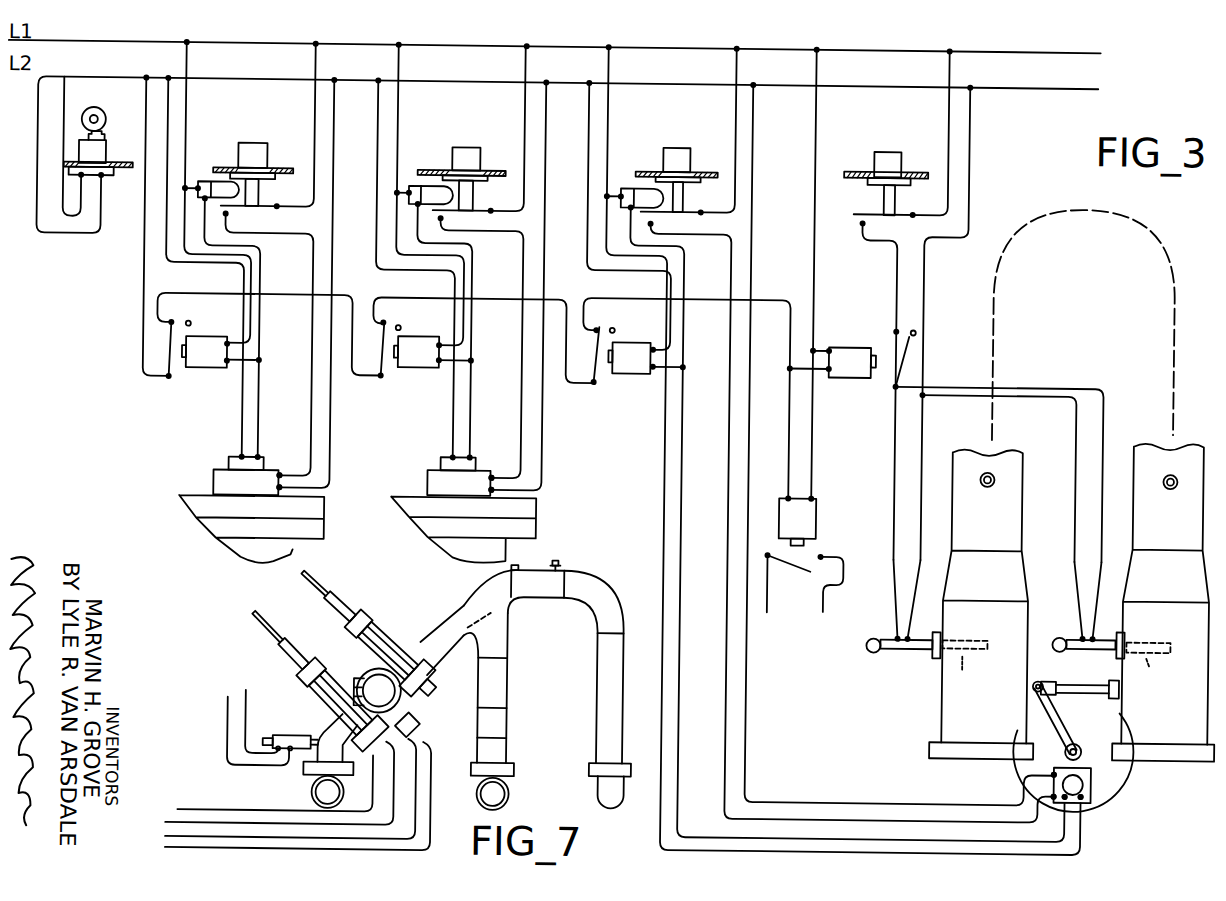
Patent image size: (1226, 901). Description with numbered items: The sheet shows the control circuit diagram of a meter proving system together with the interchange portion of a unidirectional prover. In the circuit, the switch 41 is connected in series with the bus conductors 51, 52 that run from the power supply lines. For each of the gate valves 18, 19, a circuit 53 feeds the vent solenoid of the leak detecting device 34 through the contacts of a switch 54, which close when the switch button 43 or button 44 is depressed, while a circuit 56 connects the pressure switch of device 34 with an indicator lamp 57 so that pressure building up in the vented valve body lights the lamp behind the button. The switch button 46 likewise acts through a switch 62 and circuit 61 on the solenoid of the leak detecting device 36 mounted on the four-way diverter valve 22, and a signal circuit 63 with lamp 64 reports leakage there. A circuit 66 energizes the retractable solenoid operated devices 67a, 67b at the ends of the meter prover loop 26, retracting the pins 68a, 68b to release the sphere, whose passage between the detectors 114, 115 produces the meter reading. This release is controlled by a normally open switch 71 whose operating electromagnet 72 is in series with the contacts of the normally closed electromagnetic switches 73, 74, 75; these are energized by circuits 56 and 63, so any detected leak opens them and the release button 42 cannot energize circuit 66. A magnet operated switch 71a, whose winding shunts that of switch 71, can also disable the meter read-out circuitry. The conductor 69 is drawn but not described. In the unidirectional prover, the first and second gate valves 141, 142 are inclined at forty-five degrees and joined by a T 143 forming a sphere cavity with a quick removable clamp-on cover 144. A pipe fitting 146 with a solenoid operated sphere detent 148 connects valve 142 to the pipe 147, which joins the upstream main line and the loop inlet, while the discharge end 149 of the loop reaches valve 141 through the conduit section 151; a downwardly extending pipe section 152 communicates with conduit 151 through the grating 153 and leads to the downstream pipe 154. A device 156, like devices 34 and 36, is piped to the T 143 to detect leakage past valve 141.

In FIG. 3, the gate valve 18 is at (265, 529).
In FIG. 3, the valve 19 is at (484, 530).
In FIG. 3, the four-way diverter valve 22 is at (1103, 762).
In FIG. 3, the meter prover loop 26 is at (1084, 340).
In FIG. 3, the leak detecting device 34 is at (335, 468).
In FIG. 3, the leak detecting device 36 is at (1086, 753).
In FIG. 3, the switch 41 is at (104, 141).
In FIG. 3, the release button 42 is at (897, 134).
In FIG. 3, the switch button 43 is at (264, 125).
In FIG. 3, the button 44 is at (471, 129).
In FIG. 3, the switch button 46 is at (686, 132).
In FIG. 3, the bus conductor 51 is at (555, 36).
In FIG. 3, the bus conductor 52 is at (567, 147).
In FIG. 3, the circuit 53 is at (411, 286).
In FIG. 3, the switch 54 is at (371, 345).
In FIG. 3, the circuit 56 is at (347, 336).
In FIG. 3, the indicator lamp 57 is at (318, 169).
In FIG. 3, the circuit 61 is at (899, 445).
In FIG. 7, the circuit 61 is at (275, 785).
In FIG. 3, the switch 62 is at (851, 522).
In FIG. 7, the switch 62 is at (282, 793).
In FIG. 3, the signal circuit 63 is at (849, 525).
In FIG. 3, the signal lamp 64 is at (634, 175).
In FIG. 3, the electrical circuit 66 is at (945, 324).
In FIG. 3, the retractable solenoid operated device 67a is at (904, 625).
In FIG. 3, the retractable solenoid operated device 67b is at (1088, 623).
In FIG. 3, the pin 68a is at (983, 604).
In FIG. 3, the pin 68b is at (1165, 602).
In FIG. 3, the conductor 69 is at (869, 303).
In FIG. 3, the normally open switch 71 is at (885, 380).
In FIG. 3, the magnet operated switch 71a is at (820, 592).
In FIG. 3, the operating electromagnet 72 is at (832, 384).
In FIG. 3, the normally closed electromagnetic switch 73 is at (178, 368).
In FIG. 3, the normally closed electromagnetic switch 74 is at (394, 368).
In FIG. 3, the normally closed electromagnetic switch 75 is at (636, 375).
In FIG. 3, the detector 114 is at (1027, 471).
In FIG. 3, the detector 115 is at (1142, 484).
In FIG. 7, the first gate valve 141 is at (363, 628).
In FIG. 7, the second gate valve 142 is at (314, 675).
In FIG. 7, the T 143 is at (354, 676).
In FIG. 7, the quick removable clamp-on cover 144 is at (440, 701).
In FIG. 7, the pipe fitting 146 is at (347, 761).
In FIG. 7, the pipe 147 is at (300, 791).
In FIG. 7, the solenoid operated sphere detent 148 is at (272, 728).
In FIG. 7, the discharge end 149 is at (557, 684).
In FIG. 7, the conduit section 151 is at (445, 619).
In FIG. 7, the downwardly extending pipe section 152 is at (513, 688).
In FIG. 7, the grating 153 is at (512, 615).
In FIG. 7, the pipe 154 is at (516, 788).
In FIG. 7, the device 156 is at (437, 729).